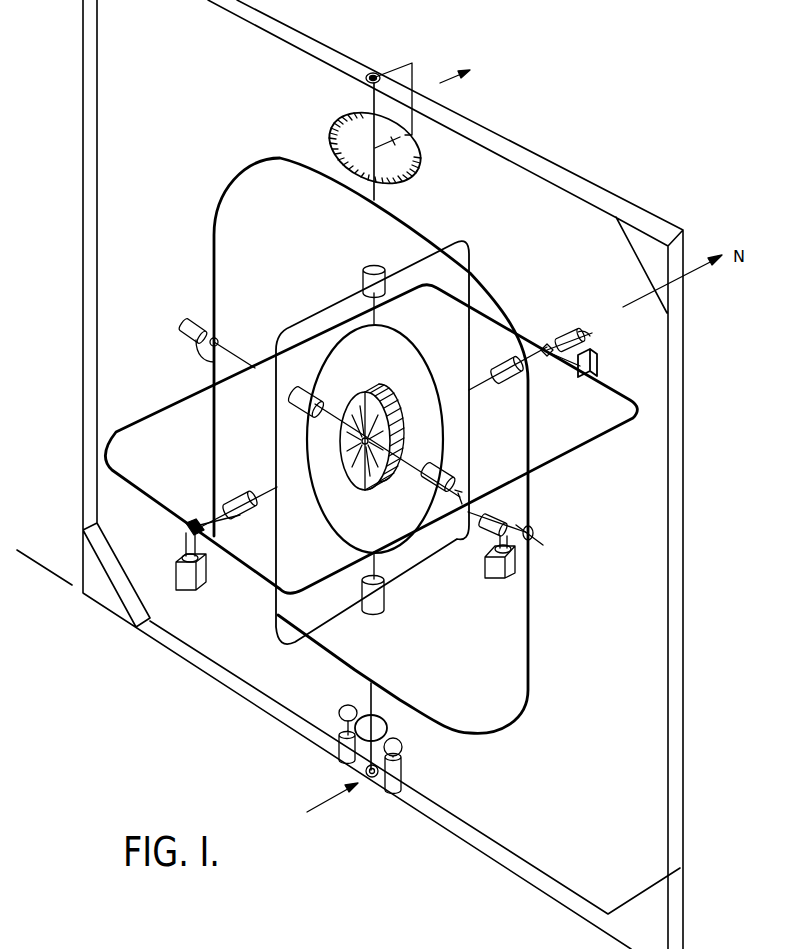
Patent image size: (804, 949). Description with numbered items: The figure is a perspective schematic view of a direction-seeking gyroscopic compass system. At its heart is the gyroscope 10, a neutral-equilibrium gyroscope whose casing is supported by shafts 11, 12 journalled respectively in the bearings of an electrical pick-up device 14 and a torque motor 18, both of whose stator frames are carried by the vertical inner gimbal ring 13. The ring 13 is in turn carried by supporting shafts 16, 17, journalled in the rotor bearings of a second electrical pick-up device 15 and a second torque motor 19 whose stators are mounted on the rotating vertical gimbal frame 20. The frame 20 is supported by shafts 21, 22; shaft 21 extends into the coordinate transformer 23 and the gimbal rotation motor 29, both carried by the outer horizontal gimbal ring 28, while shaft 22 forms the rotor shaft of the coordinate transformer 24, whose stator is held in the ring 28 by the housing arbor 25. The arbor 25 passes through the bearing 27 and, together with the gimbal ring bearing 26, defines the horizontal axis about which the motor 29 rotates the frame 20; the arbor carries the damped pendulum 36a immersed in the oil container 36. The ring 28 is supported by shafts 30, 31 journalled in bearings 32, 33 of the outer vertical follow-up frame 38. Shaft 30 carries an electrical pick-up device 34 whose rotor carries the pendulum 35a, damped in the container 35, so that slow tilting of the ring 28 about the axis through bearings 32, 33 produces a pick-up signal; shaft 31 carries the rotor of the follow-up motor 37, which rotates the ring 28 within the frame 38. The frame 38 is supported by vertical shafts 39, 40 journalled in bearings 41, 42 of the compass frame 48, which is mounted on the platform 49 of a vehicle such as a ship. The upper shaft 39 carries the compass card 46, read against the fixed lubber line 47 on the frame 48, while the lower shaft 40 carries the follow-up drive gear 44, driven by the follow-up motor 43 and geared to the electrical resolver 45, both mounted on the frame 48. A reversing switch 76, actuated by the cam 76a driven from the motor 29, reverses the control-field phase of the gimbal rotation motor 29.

The gyroscope 10 is at (388, 410).
The gyroscope supporting shaft 11 is at (339, 426).
The gyroscope supporting shaft 12 is at (428, 470).
The inner gimbal ring 13 is at (402, 349).
The electrical pick-up device 14 is at (311, 402).
The electrical pick-up device 15 is at (384, 270).
The supporting shaft 16 is at (376, 317).
The supporting shaft 17 is at (376, 570).
The torque motor 18 is at (451, 503).
The torque motor 19 is at (386, 606).
The gimbal rotation frame 20 is at (276, 445).
The supporting shaft 21 is at (474, 390).
The supporting shaft 22 is at (270, 487).
The coordinate transformer 23 is at (496, 370).
The coordinate transformer 24 is at (250, 513).
The housing arbor 25 is at (222, 530).
The gimbal ring bearing 26 is at (547, 357).
The bearing 27 is at (202, 515).
The outer horizontal gimbal ring 28 is at (600, 378).
The gimbal rotation motor 29 is at (562, 332).
The supporting shaft 30 is at (516, 522).
The supporting shaft 31 is at (236, 366).
The bearing 32 is at (533, 532).
The bearing 33 is at (217, 340).
The electrical pick-up device 34 is at (486, 535).
The container 35 is at (508, 584).
The pendulum 35a is at (490, 556).
The container 36 is at (190, 582).
The pendulum 36a is at (200, 556).
The follow-up motor 37 is at (196, 323).
The outer vertical follow-up frame 38 is at (530, 628).
The upper supporting shaft 39 is at (374, 102).
The lower supporting shaft 40 is at (370, 694).
The bearing 41 is at (368, 74).
The bearing 42 is at (374, 780).
The follow-up motor 43 is at (404, 758).
The follow-up drive gear 44 is at (376, 710).
The electrical resolver 45 is at (340, 732).
The compass card 46 is at (414, 162).
The lubber line 47 is at (408, 130).
The compass frame 48 is at (553, 171).
The platform 49 is at (40, 572).
The reversing switch 76 is at (592, 352).
The cam 76a is at (546, 345).